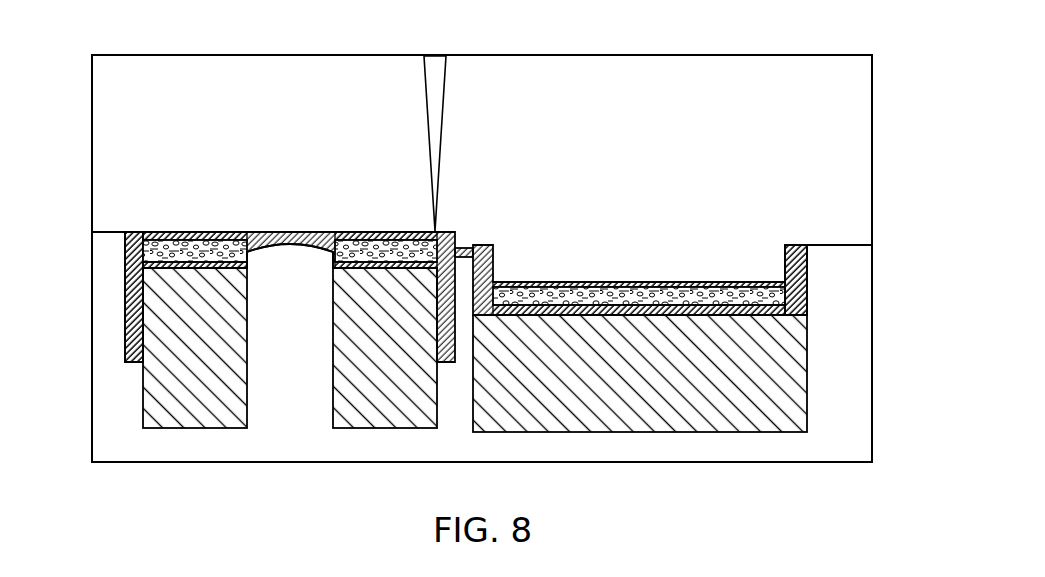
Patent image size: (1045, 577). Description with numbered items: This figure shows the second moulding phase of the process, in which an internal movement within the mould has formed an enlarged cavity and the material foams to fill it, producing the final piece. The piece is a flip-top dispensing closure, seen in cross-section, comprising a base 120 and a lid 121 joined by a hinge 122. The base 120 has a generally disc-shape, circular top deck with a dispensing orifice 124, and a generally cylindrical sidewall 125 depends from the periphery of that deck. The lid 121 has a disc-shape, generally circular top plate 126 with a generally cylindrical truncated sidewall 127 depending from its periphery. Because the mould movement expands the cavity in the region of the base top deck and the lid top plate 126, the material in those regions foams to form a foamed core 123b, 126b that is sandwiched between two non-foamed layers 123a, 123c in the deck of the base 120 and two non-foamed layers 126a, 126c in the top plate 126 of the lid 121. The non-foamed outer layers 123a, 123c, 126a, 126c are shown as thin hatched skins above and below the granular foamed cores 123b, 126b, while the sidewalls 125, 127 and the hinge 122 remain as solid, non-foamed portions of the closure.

The base 120 is at (117, 270).
The lid 121 is at (807, 300).
The hinge 122 is at (463, 248).
The non-foamed layer 123a is at (155, 232).
The foamed core 123b is at (203, 242).
The non-foamed layer 123c is at (237, 252).
The dispensing orifice 124 is at (291, 236).
The sidewall 125 is at (125, 314).
The top plate 126 is at (555, 274).
The non-foamed layer 126a is at (630, 282).
The foamed core 126b is at (695, 290).
The non-foamed layer 126c is at (748, 284).
The truncated sidewall 127 is at (807, 262).